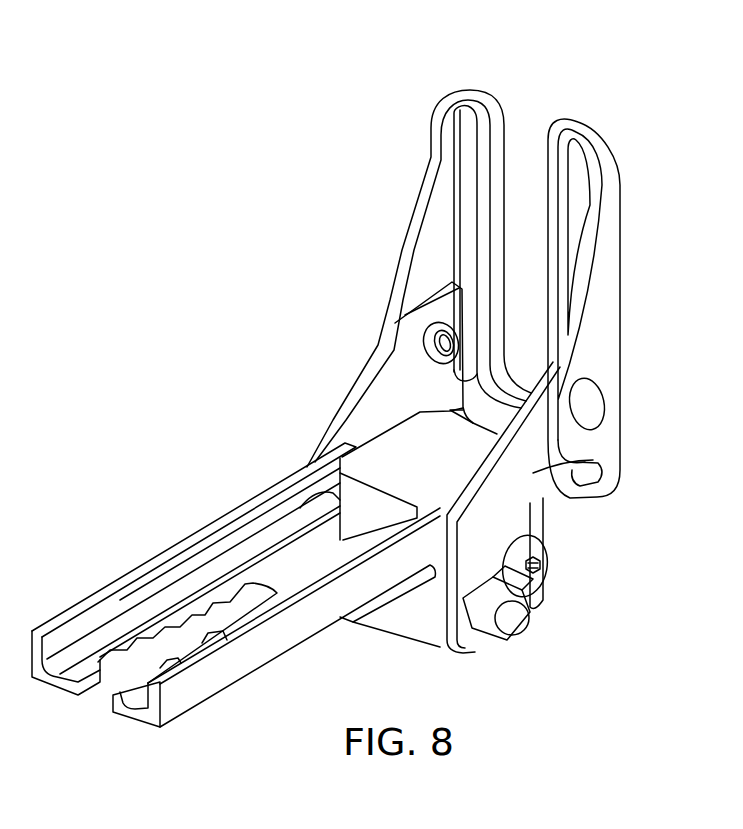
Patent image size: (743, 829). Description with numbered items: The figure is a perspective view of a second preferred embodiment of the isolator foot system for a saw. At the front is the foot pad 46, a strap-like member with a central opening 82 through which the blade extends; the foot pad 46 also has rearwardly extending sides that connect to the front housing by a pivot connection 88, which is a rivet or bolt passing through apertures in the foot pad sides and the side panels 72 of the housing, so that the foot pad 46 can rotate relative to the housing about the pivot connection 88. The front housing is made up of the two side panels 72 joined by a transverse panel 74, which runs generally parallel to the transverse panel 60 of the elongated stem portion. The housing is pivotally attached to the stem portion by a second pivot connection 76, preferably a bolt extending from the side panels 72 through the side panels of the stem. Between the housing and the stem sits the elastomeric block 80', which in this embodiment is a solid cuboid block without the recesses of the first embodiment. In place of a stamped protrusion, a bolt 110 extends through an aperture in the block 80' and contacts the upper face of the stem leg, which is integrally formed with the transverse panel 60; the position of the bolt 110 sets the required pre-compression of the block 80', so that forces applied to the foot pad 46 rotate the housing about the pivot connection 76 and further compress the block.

The foot pad 46 is at (486, 82).
The central opening 82 is at (495, 167).
The pivot connection 88 is at (435, 347).
The side panels 72 is at (400, 387).
The elastomeric block 80' is at (375, 466).
The transverse panel 74 is at (540, 520).
The bolt 110 is at (545, 572).
The pivot connection 76 is at (497, 640).
The transverse panel 60 is at (415, 597).